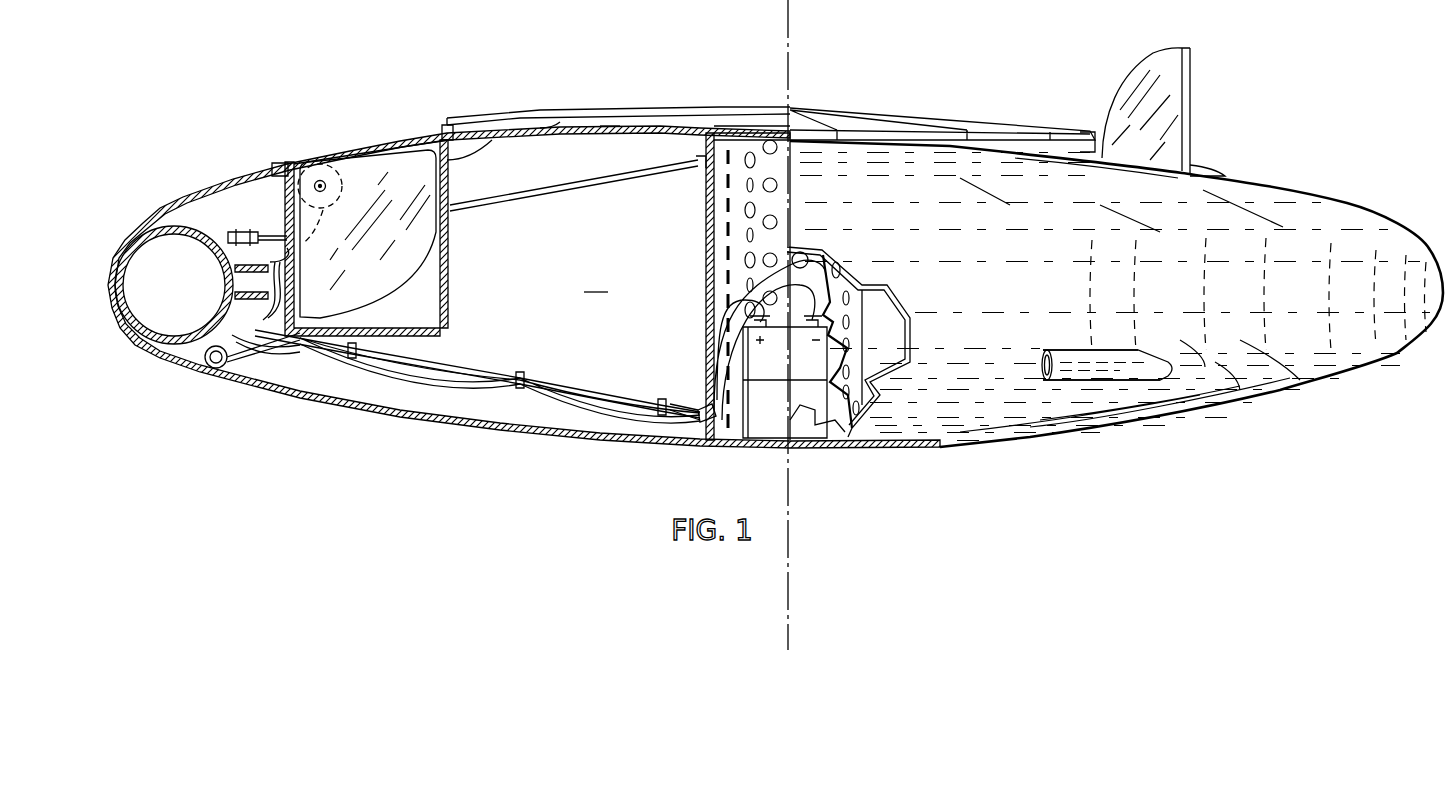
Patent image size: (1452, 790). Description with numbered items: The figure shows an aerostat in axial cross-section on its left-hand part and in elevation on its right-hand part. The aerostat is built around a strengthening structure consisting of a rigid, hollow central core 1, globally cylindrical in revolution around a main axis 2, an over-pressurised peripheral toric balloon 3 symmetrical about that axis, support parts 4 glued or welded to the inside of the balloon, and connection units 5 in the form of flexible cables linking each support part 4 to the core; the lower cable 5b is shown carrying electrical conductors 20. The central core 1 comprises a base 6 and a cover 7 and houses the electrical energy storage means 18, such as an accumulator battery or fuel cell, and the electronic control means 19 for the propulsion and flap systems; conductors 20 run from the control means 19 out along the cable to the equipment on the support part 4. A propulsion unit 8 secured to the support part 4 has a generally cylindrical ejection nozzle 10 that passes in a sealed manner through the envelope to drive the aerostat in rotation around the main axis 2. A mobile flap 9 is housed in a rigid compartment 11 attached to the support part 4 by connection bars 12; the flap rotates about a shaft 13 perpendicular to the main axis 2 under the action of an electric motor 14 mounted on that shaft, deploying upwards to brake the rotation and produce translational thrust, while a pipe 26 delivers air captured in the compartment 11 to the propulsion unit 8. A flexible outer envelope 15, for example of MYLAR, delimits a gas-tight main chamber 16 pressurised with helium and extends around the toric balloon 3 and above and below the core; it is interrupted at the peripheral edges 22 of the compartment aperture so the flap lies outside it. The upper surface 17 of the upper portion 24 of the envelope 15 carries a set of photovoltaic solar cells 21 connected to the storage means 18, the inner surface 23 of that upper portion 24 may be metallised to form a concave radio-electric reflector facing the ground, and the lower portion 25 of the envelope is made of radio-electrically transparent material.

The central core 1 is at (706, 272).
The main axis 2 is at (790, 80).
The peripheral toric balloon 3 is at (150, 323).
The support part 4 is at (213, 190).
The connection unit 5 is at (492, 207).
The lower cable 5b is at (472, 367).
The base 6 is at (735, 443).
The cover 7 is at (763, 130).
The propulsion unit 8 is at (213, 362).
The mobile flap 9 is at (403, 157).
The ejection nozzle 10 is at (1080, 370).
The compartment 11 is at (492, 153).
The connection bars 12 is at (212, 225).
The shaft 13 is at (320, 181).
The electric motor 14 is at (358, 163).
The flexible outer envelope 15 is at (653, 133).
The main chamber 16 is at (596, 278).
The upper surface 17 is at (610, 130).
The electrical energy storage means 18 is at (753, 358).
The control means 19 is at (773, 427).
The electrical conductors 20 is at (448, 385).
The photovoltaic solar cells 21 is at (723, 113).
The peripheral edges 22 is at (282, 163).
The inner surface 23 is at (560, 147).
The upper portion 24 is at (687, 130).
The lower portion 25 is at (533, 430).
The pipe 26 is at (247, 340).